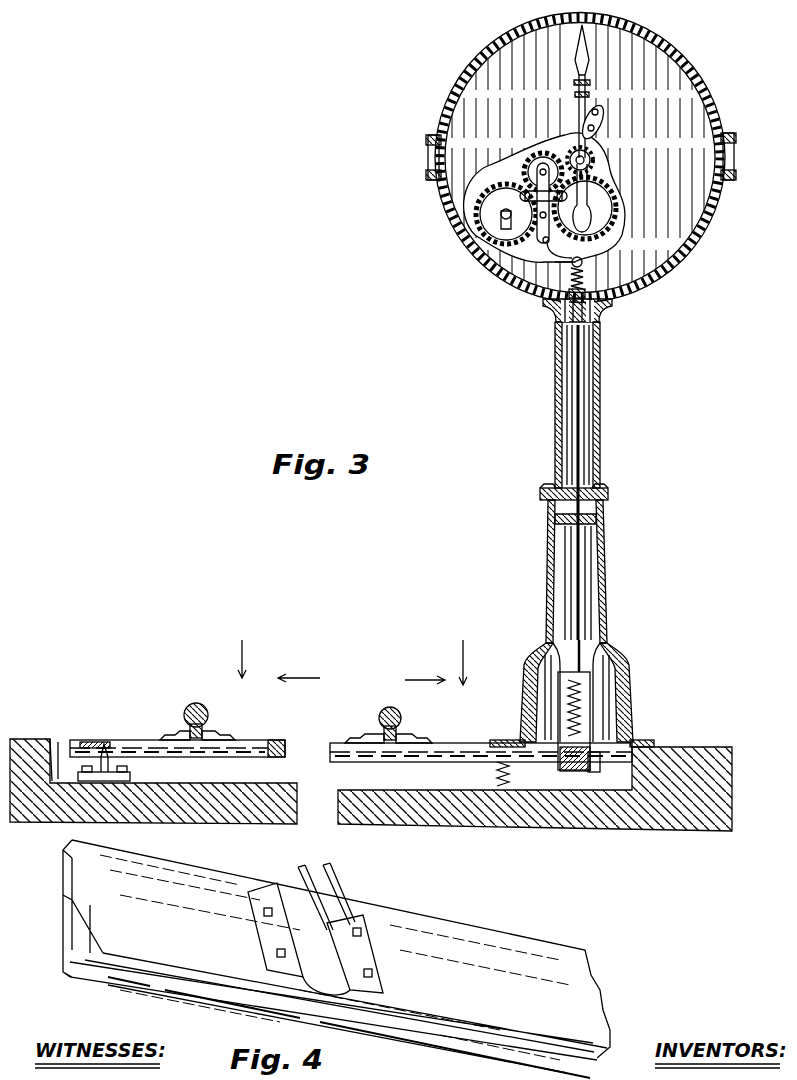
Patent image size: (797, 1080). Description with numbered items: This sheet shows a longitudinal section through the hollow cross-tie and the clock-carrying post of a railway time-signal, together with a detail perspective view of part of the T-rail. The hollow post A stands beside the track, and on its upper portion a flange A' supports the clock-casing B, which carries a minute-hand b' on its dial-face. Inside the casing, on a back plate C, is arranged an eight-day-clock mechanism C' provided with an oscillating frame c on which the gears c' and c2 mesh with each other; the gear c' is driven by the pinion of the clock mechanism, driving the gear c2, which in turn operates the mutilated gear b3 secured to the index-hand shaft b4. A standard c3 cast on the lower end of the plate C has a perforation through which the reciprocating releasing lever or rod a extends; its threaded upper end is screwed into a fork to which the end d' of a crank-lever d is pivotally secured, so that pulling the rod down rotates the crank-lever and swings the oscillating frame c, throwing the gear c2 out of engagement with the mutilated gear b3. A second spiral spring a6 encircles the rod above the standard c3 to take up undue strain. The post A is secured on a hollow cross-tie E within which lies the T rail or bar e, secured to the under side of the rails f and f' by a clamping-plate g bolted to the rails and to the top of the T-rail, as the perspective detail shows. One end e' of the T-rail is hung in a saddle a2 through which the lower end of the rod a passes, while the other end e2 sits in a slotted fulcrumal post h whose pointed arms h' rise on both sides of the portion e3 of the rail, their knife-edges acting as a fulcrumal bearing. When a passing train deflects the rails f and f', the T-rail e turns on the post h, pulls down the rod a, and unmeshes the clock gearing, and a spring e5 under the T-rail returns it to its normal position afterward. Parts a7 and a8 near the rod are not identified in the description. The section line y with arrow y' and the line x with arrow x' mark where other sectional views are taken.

In FIG. 3, the clock-casing B is at (581, 158).
In FIG. 3, the minute-hand b' is at (594, 91).
In FIG. 3, the index-hand shaft b4 is at (592, 160).
In FIG. 3, the mutilated gear b3 is at (590, 175).
In FIG. 3, the back plate C is at (599, 208).
In FIG. 3, the eight-day-clock mechanism C' is at (506, 194).
In FIG. 3, the gear c2 is at (542, 160).
In FIG. 3, the gear c' is at (503, 232).
In FIG. 3, the oscillating frame c is at (532, 220).
In FIG. 3, the crank-lever d is at (563, 249).
In FIG. 3, the end of crank-lever d' is at (554, 276).
In FIG. 3, the pivot a7 is at (583, 262).
In FIG. 3, the second spiral spring a6 is at (584, 279).
In FIG. 3, the standard c3 is at (586, 293).
In FIG. 3, the flange A' is at (596, 314).
In FIG. 3, the hollow post A is at (588, 482).
In FIG. 3, the reciprocating releasing lever or rod a is at (592, 420).
In FIG. 3, the saddle a2 is at (590, 697).
In FIG. 3, the end of T-rail e' is at (606, 762).
In FIG. 3, the foot a8 is at (588, 770).
In FIG. 3, the spring e5 is at (510, 774).
In FIG. 3, the hollow cross-tie E is at (674, 831).
In FIG. 3, the T rail or bar e is at (351, 740).
In FIG. 4, the T rail or bar e is at (336, 956).
In FIG. 3, the portion of T-rail e3 is at (403, 760).
In FIG. 4, the portion of T-rail e3 is at (180, 992).
In FIG. 3, the other end of T-rail e2 is at (90, 742).
In FIG. 3, the rail f is at (196, 710).
In FIG. 3, the rail f' is at (394, 713).
In FIG. 3, the clamping-plate g is at (178, 733).
In FIG. 4, the clamping-plate g is at (298, 878).
In FIG. 3, the slotted fulcrumal post h is at (113, 773).
In FIG. 3, the pointed arms h' is at (118, 740).
In FIG. 3, the section line x is at (241, 671).
In FIG. 3, the arrow x' is at (299, 687).
In FIG. 3, the section line y is at (470, 671).
In FIG. 3, the arrow y' is at (425, 690).